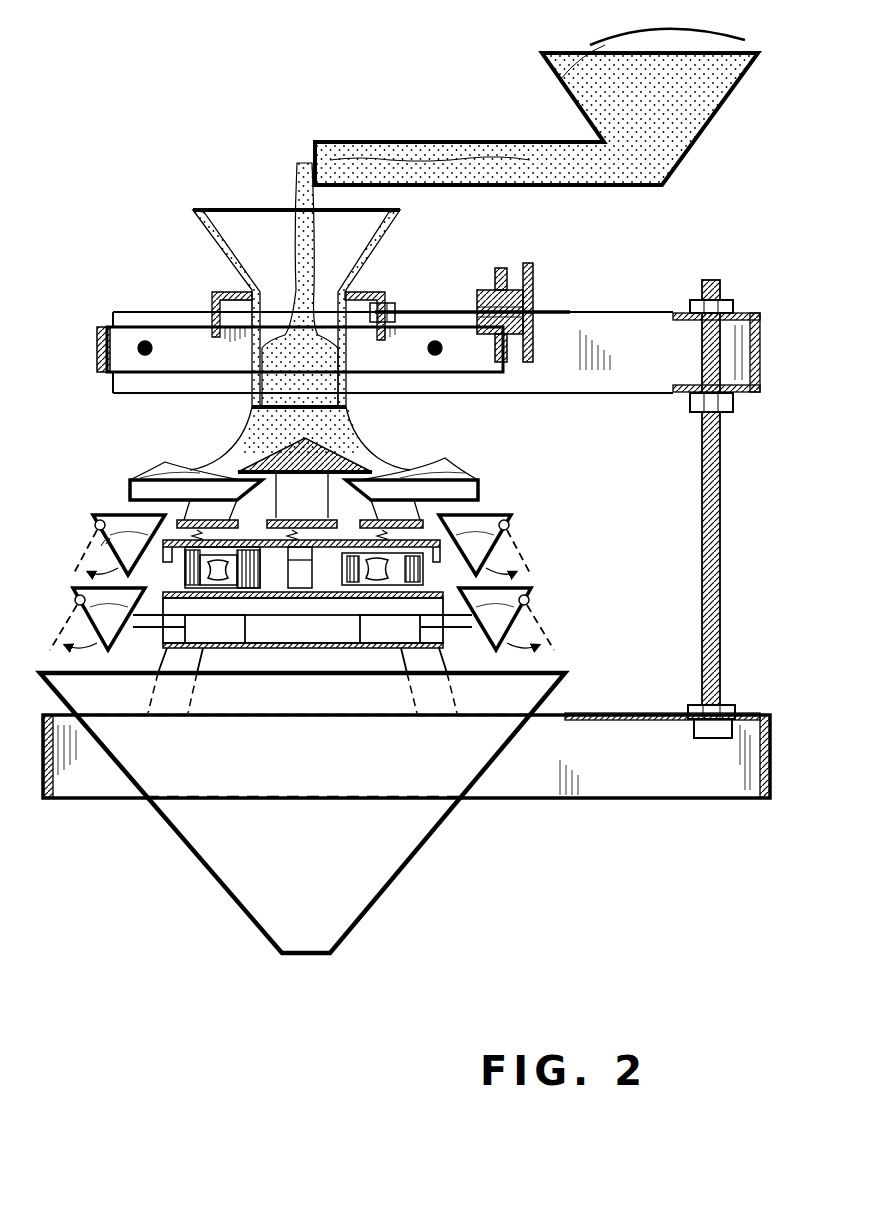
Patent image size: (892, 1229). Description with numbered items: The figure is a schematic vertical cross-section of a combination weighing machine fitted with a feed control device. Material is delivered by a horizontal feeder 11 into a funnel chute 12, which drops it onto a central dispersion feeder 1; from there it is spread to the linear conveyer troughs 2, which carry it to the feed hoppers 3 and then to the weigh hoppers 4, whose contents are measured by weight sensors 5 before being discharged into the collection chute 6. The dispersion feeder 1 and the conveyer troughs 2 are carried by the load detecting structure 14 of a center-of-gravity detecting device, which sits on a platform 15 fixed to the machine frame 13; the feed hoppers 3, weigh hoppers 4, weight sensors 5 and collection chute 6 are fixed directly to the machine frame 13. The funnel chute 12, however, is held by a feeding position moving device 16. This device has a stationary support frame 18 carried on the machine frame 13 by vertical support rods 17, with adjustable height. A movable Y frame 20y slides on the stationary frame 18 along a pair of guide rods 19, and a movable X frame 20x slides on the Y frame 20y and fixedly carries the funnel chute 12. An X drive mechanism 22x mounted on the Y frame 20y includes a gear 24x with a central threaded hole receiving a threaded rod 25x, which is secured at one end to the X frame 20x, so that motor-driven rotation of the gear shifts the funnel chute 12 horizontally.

The dispersion feeder 1 is at (348, 440).
The linear conveyer troughs 2 is at (136, 471).
The feed hoppers 3 is at (92, 520).
The weigh hoppers 4 is at (73, 599).
The weight sensors 5 is at (166, 642).
The collection chute 6 is at (434, 834).
The horizontal feeder 11 is at (718, 110).
The funnel chute 12 is at (246, 210).
The machine frame 13 is at (638, 800).
The load detecting structure 14 is at (275, 570).
The platform 15 is at (330, 600).
The feeding position moving device 16 is at (108, 260).
The vertical support rods 17 is at (722, 540).
The stationary support frame 18 is at (624, 395).
The guide rods 19 is at (148, 357).
The movable X frame 20x is at (214, 298).
The movable Y frame 20y is at (97, 352).
The X drive mechanism 22x is at (633, 248).
The gear 24x is at (533, 299).
The threaded rod 25x is at (438, 310).